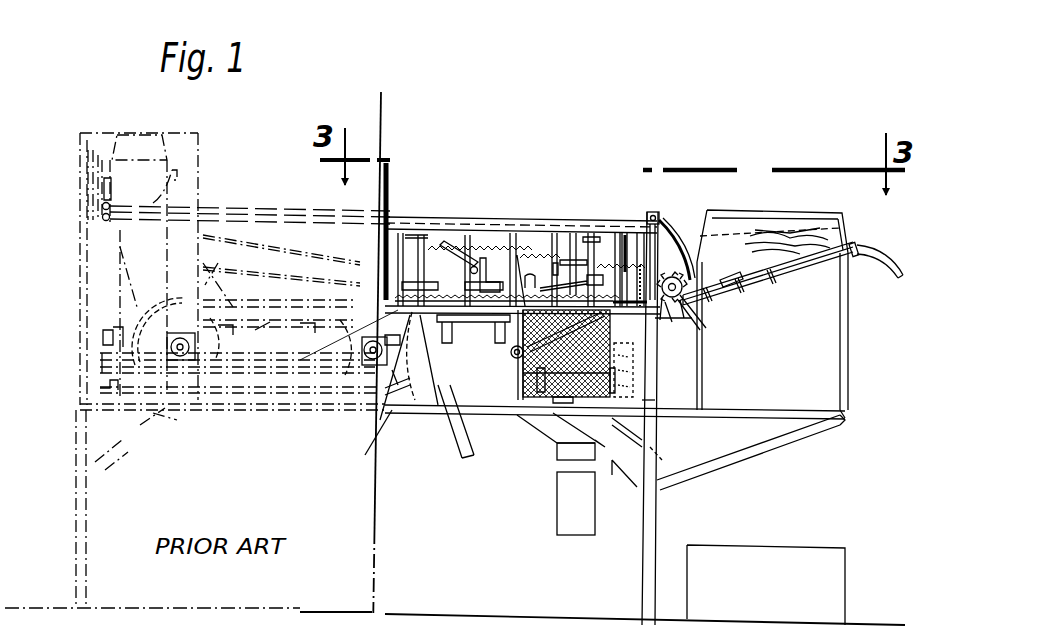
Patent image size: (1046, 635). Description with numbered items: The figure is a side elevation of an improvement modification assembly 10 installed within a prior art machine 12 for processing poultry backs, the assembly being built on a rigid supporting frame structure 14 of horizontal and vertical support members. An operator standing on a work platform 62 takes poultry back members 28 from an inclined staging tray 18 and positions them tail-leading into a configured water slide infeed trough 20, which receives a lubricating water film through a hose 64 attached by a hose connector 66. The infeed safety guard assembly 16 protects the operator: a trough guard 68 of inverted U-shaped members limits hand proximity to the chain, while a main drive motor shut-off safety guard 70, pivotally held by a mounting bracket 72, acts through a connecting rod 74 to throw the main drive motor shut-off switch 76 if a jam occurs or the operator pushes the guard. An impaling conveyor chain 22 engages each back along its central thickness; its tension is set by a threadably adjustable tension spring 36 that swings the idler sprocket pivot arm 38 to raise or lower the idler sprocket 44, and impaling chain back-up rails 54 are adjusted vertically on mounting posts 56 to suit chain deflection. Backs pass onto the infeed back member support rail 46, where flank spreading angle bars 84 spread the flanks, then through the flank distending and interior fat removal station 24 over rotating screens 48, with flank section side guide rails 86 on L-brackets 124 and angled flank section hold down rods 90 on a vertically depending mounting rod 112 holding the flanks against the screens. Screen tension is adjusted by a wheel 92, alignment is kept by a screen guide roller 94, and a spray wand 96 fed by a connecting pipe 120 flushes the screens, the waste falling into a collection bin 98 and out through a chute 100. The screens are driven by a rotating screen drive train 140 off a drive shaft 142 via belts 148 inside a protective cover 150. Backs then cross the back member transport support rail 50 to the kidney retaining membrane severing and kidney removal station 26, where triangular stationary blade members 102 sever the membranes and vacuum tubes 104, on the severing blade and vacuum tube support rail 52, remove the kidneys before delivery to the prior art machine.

The improvement modification assembly 10 is at (612, 72).
The prior art machine 12 is at (240, 160).
The rigid supporting frame structure 14 is at (818, 490).
The infeed safety guard assembly 16 is at (729, 156).
The poultry back member staging tray 18 is at (772, 214).
The configured water slide infeed trough 20 is at (780, 284).
The impaling conveyor chain 22 is at (457, 300).
The flank distending and interior fat removal station 24 is at (684, 340).
The kidney retaining membrane severing and kidney removal station 26 is at (440, 410).
The poultry back members 28 is at (790, 226).
The threadably adjustable tension spring 36 is at (510, 217).
The idler sprocket pivot arm 38 is at (487, 220).
The idler sprocket 44 is at (452, 220).
The infeed back member support rail 46 is at (685, 342).
The rotating screens 48 is at (540, 415).
The back member transport support rail 50 is at (455, 323).
The severing blade and vacuum tube support rail 52 is at (388, 370).
The impaling chain back-up rails 54 is at (395, 285).
The mounting posts 56 is at (405, 213).
The work platform 62 is at (760, 545).
The hose 64 is at (892, 272).
The hose connector 66 is at (858, 256).
The trough guard 68 is at (740, 268).
The main drive motor shut-off safety guard 70 is at (690, 232).
The mounting bracket 72 is at (653, 215).
The connecting rod 74 is at (610, 222).
The main drive motor shut-off switch 76 is at (100, 208).
The flank spreading angle bars 84 is at (668, 335).
The flank section side guide rails 86 is at (463, 352).
The angled flank section hold down rods 90 is at (628, 365).
The wheel 92 is at (594, 405).
The screen guide roller 94 is at (516, 370).
The spray wand 96 is at (577, 217).
The collection bin 98 is at (555, 450).
The chute 100 is at (556, 515).
The triangular shaped angularly positioned stationary blade members 102 is at (398, 310).
The vacuum tubes 104 is at (437, 455).
The vertically depending mounting rod 112 is at (628, 217).
The connecting pipe 120 is at (460, 218).
The L-brackets 124 is at (530, 220).
The rotating screen drive train 140 is at (666, 440).
The drive shaft 142 is at (385, 425).
The belts 148 is at (662, 483).
The protective cover 150 is at (645, 395).